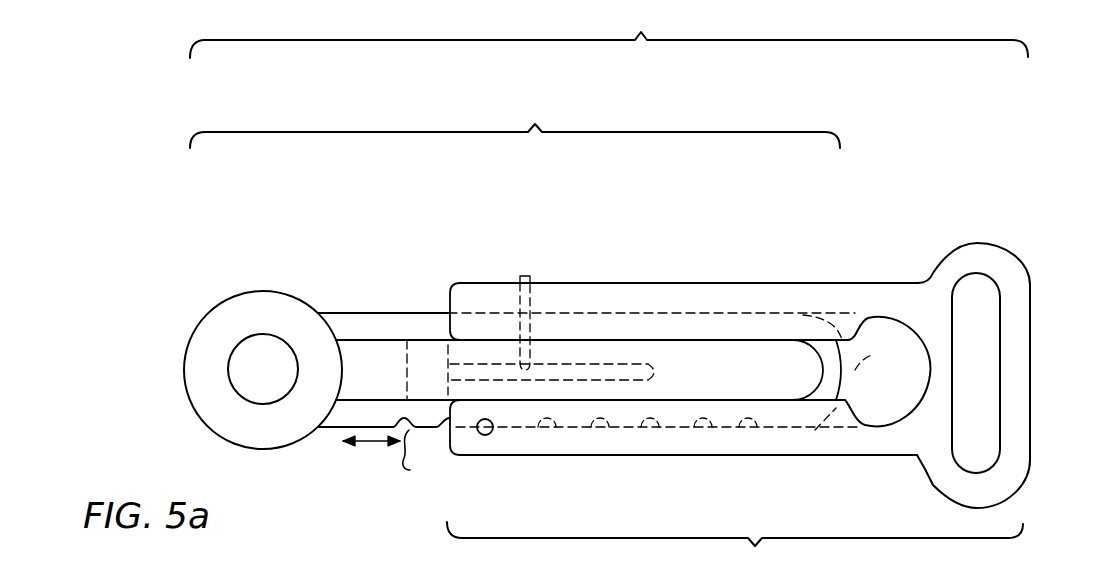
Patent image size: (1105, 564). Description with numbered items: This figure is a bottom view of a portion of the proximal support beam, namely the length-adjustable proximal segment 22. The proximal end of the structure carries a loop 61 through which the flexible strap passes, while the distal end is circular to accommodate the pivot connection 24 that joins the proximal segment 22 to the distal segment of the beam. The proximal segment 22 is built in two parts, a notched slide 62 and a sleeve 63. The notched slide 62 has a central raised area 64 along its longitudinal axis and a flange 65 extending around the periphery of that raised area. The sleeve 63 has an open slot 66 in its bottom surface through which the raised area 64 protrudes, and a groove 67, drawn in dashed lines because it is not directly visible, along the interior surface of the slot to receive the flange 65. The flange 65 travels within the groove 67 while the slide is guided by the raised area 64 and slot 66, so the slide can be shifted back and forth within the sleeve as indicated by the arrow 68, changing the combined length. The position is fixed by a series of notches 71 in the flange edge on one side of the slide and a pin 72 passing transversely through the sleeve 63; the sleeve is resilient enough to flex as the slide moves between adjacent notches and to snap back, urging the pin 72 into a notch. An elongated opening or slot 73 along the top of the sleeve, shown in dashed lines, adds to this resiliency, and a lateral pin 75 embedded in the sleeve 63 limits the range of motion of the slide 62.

The proximal segment 22 is at (645, 33).
The notched slide 62 is at (540, 125).
The sleeve 63 is at (757, 548).
The loop 61 is at (1020, 284).
The pivot connection 24 is at (257, 362).
The central raised area 64 is at (354, 355).
The flange 65 is at (412, 332).
The open slot 66 is at (858, 367).
The groove 67 is at (849, 332).
The arrow 68 is at (371, 447).
The notches 71 is at (446, 422).
The pin 72 is at (492, 432).
The elongated opening or slot 73 is at (602, 382).
The lateral pin 75 is at (531, 276).